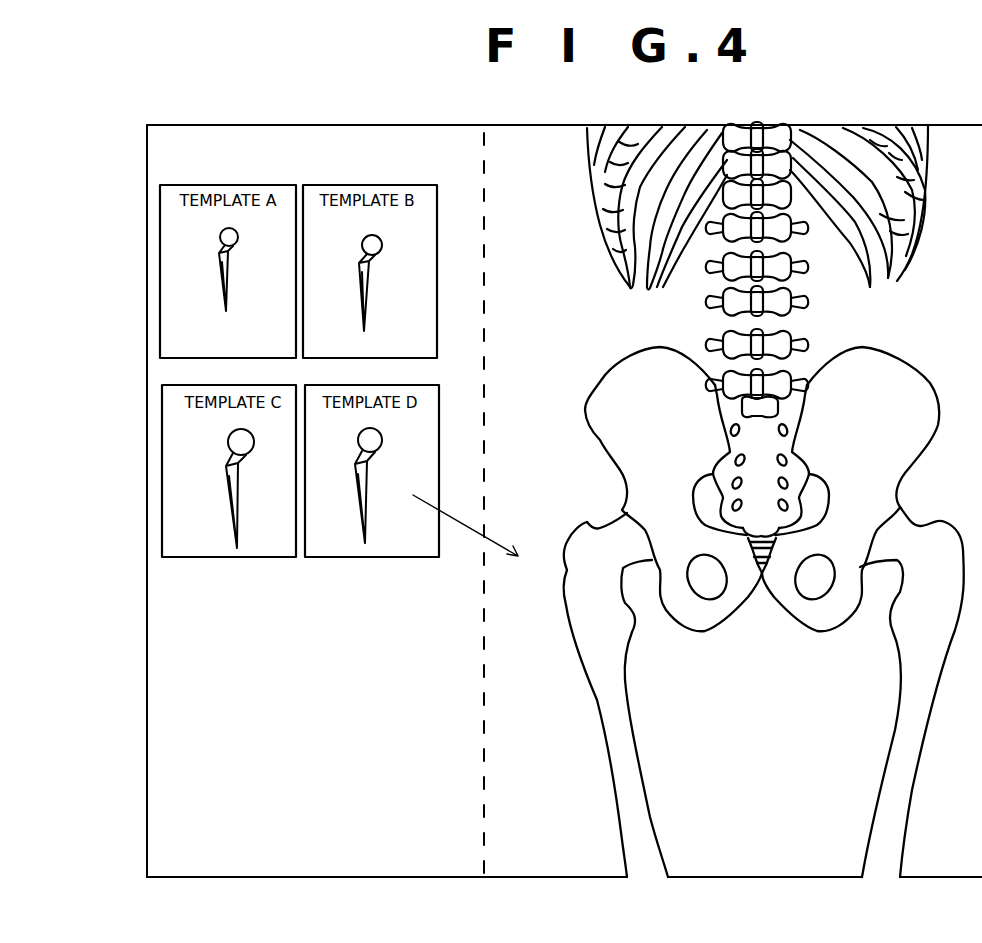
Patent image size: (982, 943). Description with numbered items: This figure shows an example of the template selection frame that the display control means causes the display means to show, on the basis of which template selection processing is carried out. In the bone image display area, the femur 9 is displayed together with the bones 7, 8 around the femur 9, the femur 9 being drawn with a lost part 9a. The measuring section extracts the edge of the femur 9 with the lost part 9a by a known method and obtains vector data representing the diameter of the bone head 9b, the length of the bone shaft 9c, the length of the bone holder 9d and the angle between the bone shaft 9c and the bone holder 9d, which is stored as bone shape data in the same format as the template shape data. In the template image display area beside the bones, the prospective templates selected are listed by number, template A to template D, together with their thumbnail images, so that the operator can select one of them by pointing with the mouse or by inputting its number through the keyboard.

The bone 7 is at (787, 590).
The bone 8 is at (900, 700).
The femur 9 is at (610, 678).
The lost part 9a is at (566, 572).
The bone head 9b is at (615, 498).
The bone shaft 9c is at (622, 715).
The bone holder 9d is at (627, 553).